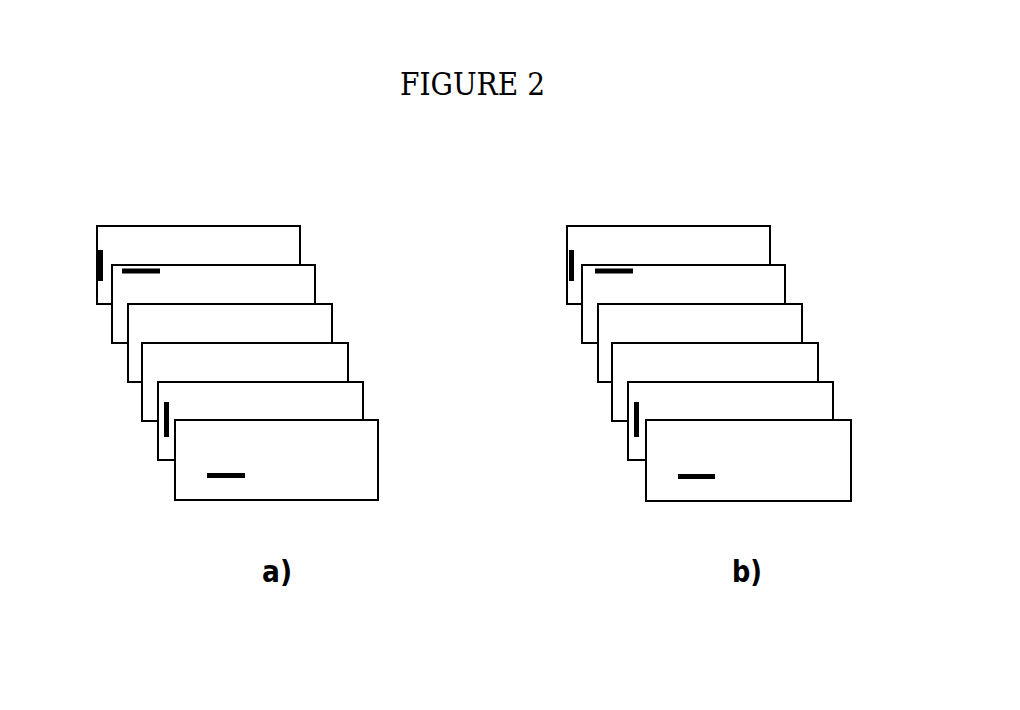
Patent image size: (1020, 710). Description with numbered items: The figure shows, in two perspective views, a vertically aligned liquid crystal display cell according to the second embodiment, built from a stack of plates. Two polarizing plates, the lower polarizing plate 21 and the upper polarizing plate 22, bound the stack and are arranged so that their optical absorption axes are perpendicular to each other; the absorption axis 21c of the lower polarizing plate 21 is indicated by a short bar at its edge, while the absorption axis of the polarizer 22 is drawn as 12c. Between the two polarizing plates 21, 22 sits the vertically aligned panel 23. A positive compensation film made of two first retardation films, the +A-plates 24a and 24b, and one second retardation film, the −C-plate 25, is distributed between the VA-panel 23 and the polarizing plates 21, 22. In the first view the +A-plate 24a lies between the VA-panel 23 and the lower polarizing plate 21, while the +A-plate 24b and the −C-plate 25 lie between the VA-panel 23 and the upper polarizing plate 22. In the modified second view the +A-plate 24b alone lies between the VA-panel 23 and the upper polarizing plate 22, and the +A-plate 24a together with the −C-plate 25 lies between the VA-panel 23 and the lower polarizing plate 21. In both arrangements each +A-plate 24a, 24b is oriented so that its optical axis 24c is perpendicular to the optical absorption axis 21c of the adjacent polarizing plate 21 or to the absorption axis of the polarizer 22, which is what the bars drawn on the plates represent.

In FIG. 2a, the lower polarizing plate 21 is at (300, 238).
In FIG. 2b, the lower polarizing plate 21 is at (770, 238).
In FIG. 2a, the optical absorption axis of the lower polarizing plate 21c is at (98, 267).
In FIG. 2b, the optical absorption axis of the lower polarizing plate 21c is at (569, 267).
In FIG. 2a, the first retardation film (+A-plate) 24a is at (315, 283).
In FIG. 2b, the first retardation film (+A-plate) 24a is at (785, 283).
In FIG. 2a, the optical axis of the first retardation film 24c is at (126, 271).
In FIG. 2b, the optical axis of the first retardation film 24c is at (596, 271).
In FIG. 2a, the vertically aligned panel (VA-panel) 23 is at (332, 318).
In FIG. 2b, the vertically aligned panel (VA-panel) 23 is at (818, 362).
In FIG. 2a, the second retardation film (−C-plate) 25 is at (348, 363).
In FIG. 2b, the second retardation film (−C-plate) 25 is at (802, 325).
In FIG. 2a, the first retardation film (+A-plate) 24b is at (363, 400).
In FIG. 2b, the first retardation film (+A-plate) 24b is at (833, 400).
In FIG. 2a, the upper polarizing plate 22 is at (378, 447).
In FIG. 2b, the upper polarizing plate 22 is at (851, 447).
In FIG. 2a, the absorption axis of polarizer 12c is at (225, 479).
In FIG. 2b, the absorption axis of polarizer 12c is at (695, 479).